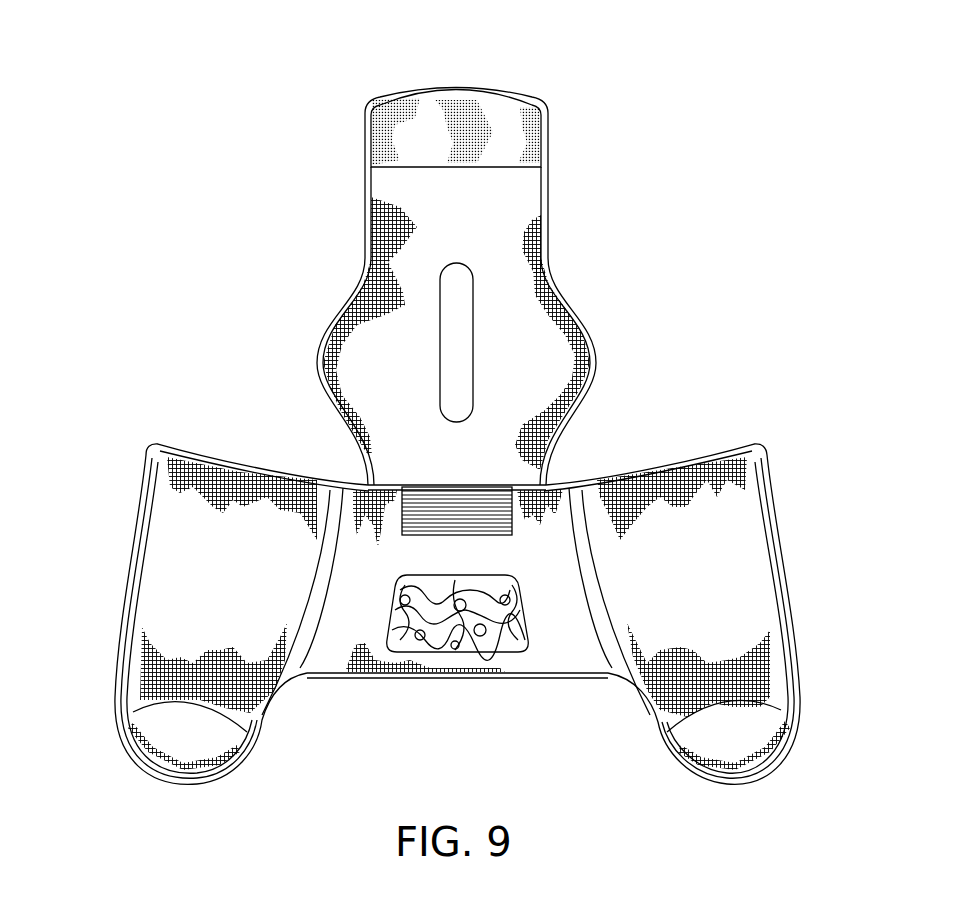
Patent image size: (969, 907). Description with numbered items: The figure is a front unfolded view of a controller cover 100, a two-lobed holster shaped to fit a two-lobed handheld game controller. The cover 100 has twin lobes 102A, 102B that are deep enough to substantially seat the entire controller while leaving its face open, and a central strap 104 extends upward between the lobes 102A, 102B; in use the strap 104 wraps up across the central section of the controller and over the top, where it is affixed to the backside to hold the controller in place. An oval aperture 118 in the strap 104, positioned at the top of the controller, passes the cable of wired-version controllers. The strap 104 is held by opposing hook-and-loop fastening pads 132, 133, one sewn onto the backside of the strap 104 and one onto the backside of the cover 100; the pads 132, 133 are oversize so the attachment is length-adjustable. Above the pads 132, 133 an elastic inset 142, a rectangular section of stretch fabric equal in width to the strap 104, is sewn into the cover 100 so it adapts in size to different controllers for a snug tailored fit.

The controller cover 100 is at (253, 277).
The lobe 102A is at (128, 557).
The lobe 102B is at (778, 503).
The central strap 104 is at (365, 137).
The oval aperture 118 is at (463, 330).
The hook-and-loop fastening pad 132 is at (495, 678).
The hook-and-loop fastening pad 133 is at (522, 106).
The elastic inset 142 is at (415, 497).